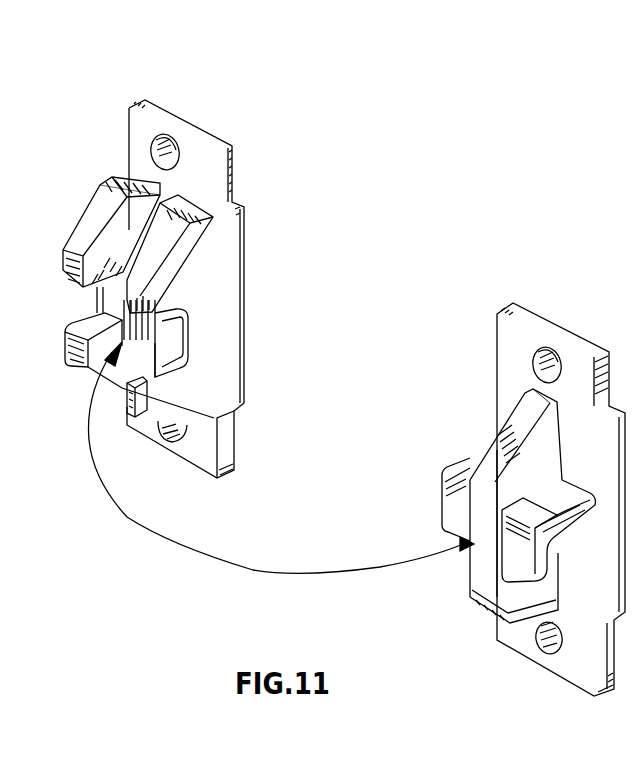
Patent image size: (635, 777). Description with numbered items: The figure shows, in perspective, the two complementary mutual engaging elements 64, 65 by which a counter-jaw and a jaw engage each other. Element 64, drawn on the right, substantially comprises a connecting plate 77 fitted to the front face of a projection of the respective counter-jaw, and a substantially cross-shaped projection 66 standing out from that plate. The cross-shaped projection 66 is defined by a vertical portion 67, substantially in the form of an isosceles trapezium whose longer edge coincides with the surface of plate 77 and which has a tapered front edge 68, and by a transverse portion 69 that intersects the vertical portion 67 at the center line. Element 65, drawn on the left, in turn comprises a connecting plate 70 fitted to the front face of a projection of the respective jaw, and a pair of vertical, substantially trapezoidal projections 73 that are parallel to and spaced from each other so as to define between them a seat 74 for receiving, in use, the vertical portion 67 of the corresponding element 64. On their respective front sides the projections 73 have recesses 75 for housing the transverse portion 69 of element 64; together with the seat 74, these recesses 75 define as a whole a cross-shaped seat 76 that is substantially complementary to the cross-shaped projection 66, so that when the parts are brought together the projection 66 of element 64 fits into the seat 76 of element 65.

The engaging element 64 is at (545, 294).
The engaging element 65 is at (212, 110).
The cross-shaped projection 66 is at (471, 455).
The vertical portion 67 is at (538, 457).
The tapered front edge 68 is at (478, 513).
The transverse portion 69 is at (512, 548).
The connecting plate 70 is at (200, 179).
The vertical trapezoidal projections 73 is at (93, 226).
The seat 74 is at (134, 214).
The recesses 75 is at (100, 310).
The cross-shaped seat 76 is at (137, 340).
The connecting plate 77 is at (503, 345).